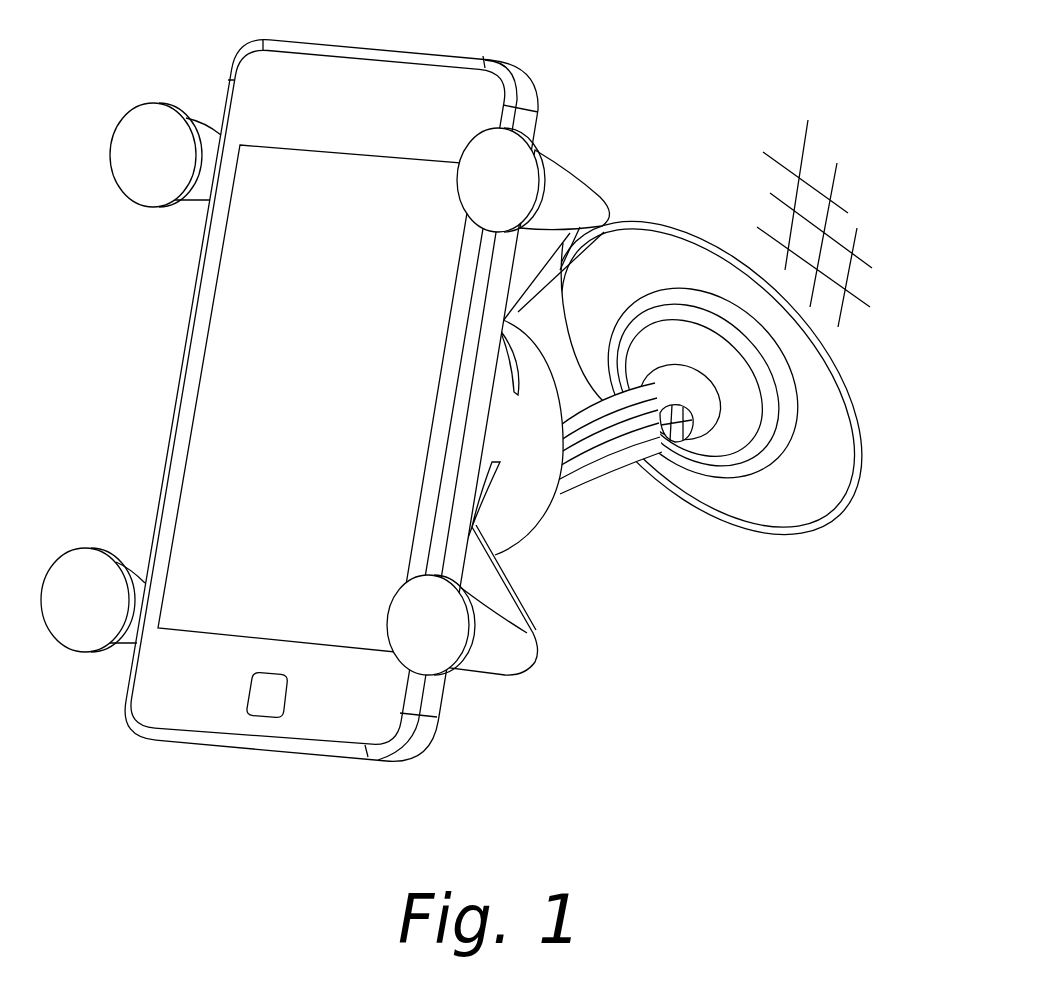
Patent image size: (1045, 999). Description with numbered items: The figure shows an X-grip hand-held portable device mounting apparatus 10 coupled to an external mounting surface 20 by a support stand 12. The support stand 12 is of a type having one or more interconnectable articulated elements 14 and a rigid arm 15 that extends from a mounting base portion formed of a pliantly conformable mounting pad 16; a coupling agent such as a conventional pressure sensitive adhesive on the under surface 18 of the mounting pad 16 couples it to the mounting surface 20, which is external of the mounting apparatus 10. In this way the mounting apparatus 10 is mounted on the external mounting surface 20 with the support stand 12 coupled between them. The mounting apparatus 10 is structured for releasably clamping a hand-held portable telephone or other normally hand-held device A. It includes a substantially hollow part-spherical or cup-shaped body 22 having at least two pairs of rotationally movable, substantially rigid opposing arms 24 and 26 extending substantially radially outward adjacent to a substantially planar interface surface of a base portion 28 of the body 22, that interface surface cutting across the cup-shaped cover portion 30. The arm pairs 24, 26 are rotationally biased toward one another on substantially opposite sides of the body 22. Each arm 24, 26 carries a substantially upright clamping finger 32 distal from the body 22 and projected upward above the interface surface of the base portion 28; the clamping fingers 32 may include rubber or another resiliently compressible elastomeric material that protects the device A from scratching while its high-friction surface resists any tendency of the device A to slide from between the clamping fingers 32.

The X-grip hand-held portable device mounting apparatus 10 is at (693, 88).
The support stand 12 is at (647, 480).
The interconnectable articulated elements 14 is at (555, 470).
The rigid arm 15 is at (615, 450).
The pliantly conformable mounting pad 16 is at (806, 521).
The under surface 18 is at (837, 383).
The external mounting surface 20 is at (758, 204).
The body 22 is at (540, 507).
The opposing arms 24 is at (562, 240).
The opposing arms 26 is at (500, 603).
The base portion 28 is at (492, 433).
The cover portion 30 is at (553, 461).
The clamping fingers 32 is at (138, 164).
The normally hand-held device A is at (428, 50).